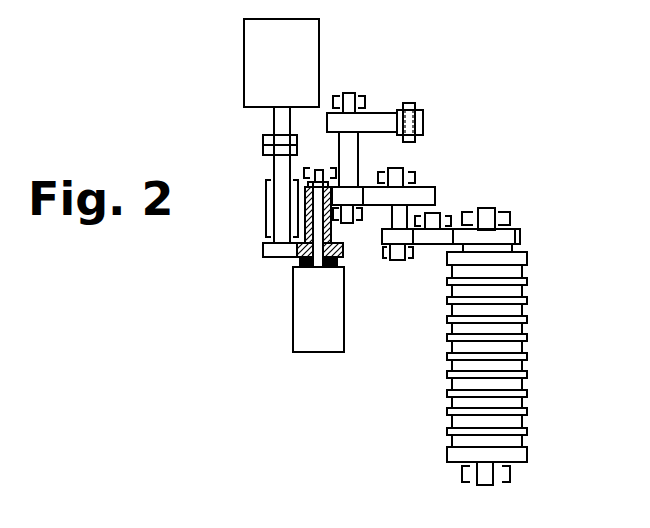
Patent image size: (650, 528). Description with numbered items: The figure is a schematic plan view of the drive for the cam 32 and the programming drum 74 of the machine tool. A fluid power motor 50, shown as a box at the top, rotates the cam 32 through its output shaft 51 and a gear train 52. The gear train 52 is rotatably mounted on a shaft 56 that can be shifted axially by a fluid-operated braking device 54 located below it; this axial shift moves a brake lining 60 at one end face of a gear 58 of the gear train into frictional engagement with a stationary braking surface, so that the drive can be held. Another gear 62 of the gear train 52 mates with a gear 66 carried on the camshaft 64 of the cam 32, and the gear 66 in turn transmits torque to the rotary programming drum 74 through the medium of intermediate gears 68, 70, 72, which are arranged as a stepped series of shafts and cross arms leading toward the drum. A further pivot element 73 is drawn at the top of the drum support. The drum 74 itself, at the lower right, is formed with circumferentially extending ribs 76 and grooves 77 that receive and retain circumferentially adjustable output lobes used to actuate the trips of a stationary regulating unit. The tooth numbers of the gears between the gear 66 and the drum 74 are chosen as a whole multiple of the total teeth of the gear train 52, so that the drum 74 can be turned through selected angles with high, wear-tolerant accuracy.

The cam 32 is at (382, 120).
The fluid power motor 50 is at (252, 60).
The output shaft 51 is at (273, 120).
The gear train 52 is at (330, 228).
The fluid-operated braking device 54 is at (300, 307).
The shaft 56 is at (318, 166).
The gear 58 is at (292, 257).
The brake lining 60 is at (344, 262).
The gear 62 is at (305, 190).
The camshaft 64 is at (352, 146).
The gear 66 is at (345, 198).
The intermediate gear 68 is at (425, 197).
The intermediate gear 70 is at (397, 262).
The intermediate gear 72 is at (433, 246).
The pivot pin 73 is at (490, 211).
The rotary programming drum 74 is at (525, 364).
The ribs 76 is at (526, 302).
The grooves 77 is at (519, 382).